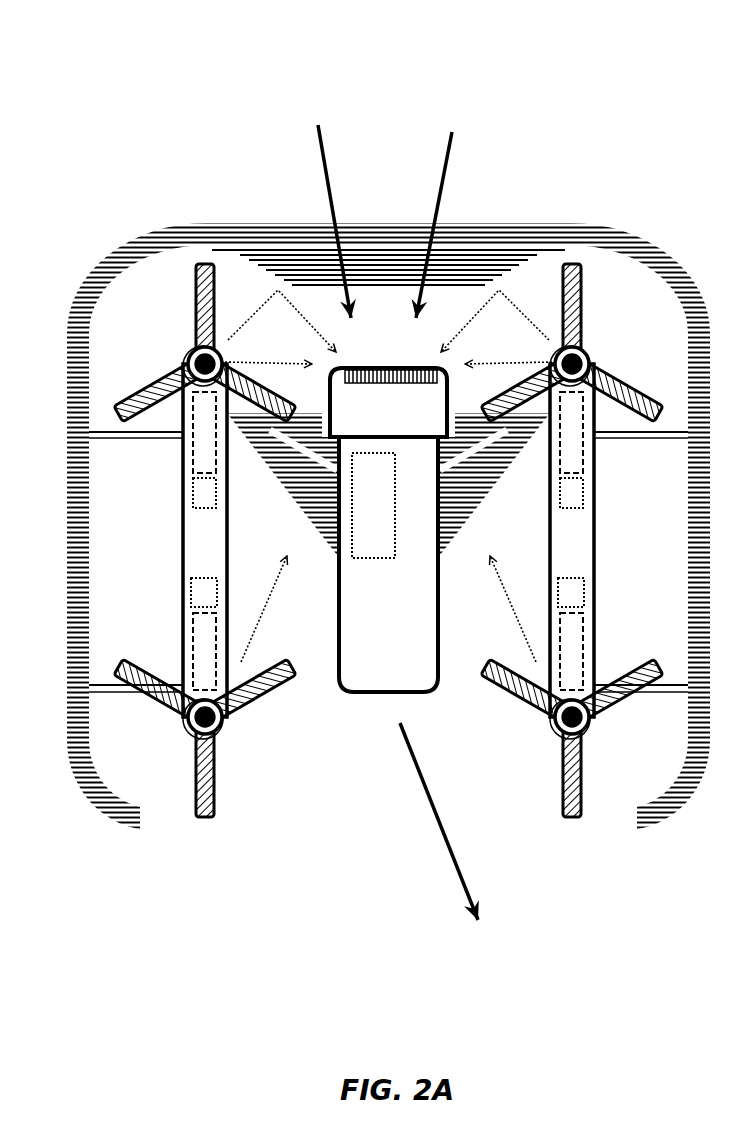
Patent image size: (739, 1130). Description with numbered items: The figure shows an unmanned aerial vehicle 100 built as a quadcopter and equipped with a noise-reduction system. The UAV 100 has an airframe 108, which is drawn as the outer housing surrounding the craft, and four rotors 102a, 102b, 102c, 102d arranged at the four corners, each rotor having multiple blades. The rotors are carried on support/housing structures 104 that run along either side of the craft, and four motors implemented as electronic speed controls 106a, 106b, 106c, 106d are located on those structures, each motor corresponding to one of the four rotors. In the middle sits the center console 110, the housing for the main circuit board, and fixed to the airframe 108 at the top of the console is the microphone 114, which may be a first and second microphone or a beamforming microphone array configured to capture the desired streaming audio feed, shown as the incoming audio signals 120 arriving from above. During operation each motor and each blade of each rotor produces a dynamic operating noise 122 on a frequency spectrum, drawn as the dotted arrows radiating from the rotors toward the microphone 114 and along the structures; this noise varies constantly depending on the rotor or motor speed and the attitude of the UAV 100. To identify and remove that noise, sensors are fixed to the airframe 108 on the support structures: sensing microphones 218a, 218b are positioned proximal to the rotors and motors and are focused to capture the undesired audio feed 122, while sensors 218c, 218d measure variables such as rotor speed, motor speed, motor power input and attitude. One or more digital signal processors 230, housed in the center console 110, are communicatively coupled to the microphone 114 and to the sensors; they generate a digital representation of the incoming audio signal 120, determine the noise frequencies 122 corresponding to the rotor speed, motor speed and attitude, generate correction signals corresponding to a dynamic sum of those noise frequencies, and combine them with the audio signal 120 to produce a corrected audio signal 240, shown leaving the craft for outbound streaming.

The unmanned aerial vehicle 100 is at (640, 56).
The rotor 102a is at (190, 356).
The rotor 102b is at (590, 357).
The rotor 102c is at (228, 722).
The rotor 102d is at (548, 722).
The support/housing structure 104 is at (183, 558).
The electronic speed control 106a is at (190, 440).
The electronic speed control 106b is at (583, 440).
The electronic speed control 106c is at (193, 652).
The electronic speed control 106d is at (583, 652).
The airframe 108 is at (140, 244).
The center console 110 is at (383, 557).
The microphone 114 is at (357, 383).
The audio signal 120 is at (322, 163).
The operating noise 122 is at (298, 311).
The sensing microphone 218a is at (216, 492).
The sensing microphone 218b is at (583, 492).
The sensor 218c is at (193, 592).
The sensor 218d is at (583, 592).
The digital signal processor 230 is at (372, 560).
The corrected audio signal 240 is at (435, 812).